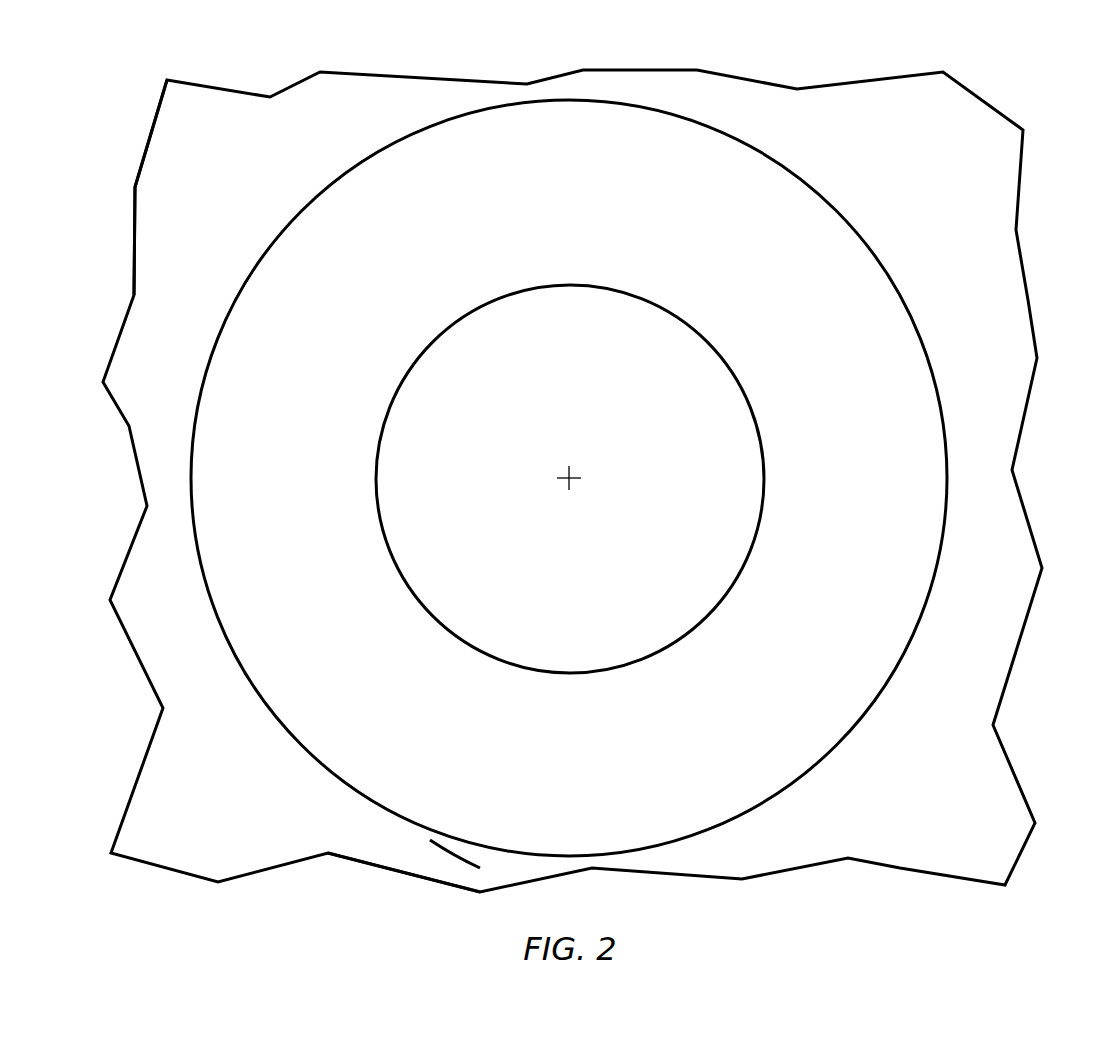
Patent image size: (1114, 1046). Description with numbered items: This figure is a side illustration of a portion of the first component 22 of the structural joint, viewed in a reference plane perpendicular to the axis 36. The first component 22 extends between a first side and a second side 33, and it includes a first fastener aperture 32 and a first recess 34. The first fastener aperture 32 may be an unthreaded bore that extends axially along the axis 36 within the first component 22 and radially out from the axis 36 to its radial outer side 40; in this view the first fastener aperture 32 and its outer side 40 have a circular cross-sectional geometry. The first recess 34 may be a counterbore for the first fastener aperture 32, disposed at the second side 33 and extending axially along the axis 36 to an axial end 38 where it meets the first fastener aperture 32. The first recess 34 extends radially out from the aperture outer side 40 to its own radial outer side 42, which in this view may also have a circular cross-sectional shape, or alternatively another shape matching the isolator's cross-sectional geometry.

The first component 22 is at (1018, 112).
The first fastener aperture 32 is at (559, 425).
The second side 33 is at (155, 200).
The first recess 34 is at (908, 433).
The axis 36 is at (574, 481).
The axial end 38 is at (457, 815).
The radial outer side 40 is at (495, 658).
The radial outer side 42 is at (383, 803).